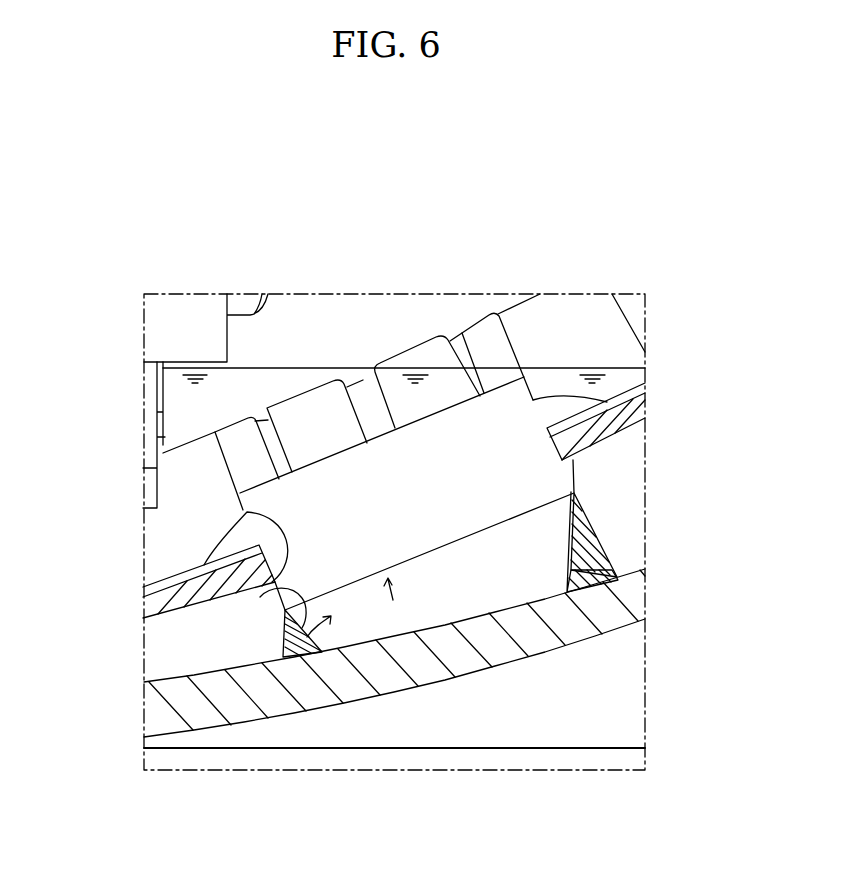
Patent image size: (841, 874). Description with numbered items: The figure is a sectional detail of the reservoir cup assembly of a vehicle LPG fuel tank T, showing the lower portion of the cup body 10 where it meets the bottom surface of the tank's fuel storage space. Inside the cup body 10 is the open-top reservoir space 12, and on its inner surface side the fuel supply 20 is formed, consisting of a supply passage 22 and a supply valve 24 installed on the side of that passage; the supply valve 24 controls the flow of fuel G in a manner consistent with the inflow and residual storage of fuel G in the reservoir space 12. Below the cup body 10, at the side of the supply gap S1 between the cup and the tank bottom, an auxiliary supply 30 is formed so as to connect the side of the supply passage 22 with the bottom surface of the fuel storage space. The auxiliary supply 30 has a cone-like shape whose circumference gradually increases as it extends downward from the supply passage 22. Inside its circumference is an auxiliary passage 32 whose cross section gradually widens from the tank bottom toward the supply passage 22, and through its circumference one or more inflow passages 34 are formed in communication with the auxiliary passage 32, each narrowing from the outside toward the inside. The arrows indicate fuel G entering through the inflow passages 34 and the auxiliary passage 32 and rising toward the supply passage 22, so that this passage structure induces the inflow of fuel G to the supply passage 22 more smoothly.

The reservoir space 12 is at (305, 323).
The fuel supply 20 is at (75, 448).
The supply valve 24 is at (320, 487).
The supply passage 22 is at (247, 512).
The cup body 10 is at (157, 606).
The auxiliary supply 30 is at (593, 507).
The auxiliary passage 32 is at (260, 597).
The inflow passage 34 is at (559, 569).
The fuel tank T is at (378, 690).
The supply gap S1 is at (180, 648).
The fuel G is at (353, 367).